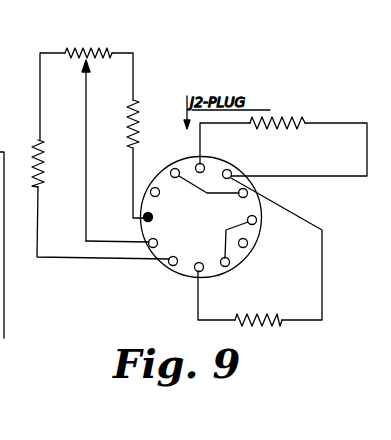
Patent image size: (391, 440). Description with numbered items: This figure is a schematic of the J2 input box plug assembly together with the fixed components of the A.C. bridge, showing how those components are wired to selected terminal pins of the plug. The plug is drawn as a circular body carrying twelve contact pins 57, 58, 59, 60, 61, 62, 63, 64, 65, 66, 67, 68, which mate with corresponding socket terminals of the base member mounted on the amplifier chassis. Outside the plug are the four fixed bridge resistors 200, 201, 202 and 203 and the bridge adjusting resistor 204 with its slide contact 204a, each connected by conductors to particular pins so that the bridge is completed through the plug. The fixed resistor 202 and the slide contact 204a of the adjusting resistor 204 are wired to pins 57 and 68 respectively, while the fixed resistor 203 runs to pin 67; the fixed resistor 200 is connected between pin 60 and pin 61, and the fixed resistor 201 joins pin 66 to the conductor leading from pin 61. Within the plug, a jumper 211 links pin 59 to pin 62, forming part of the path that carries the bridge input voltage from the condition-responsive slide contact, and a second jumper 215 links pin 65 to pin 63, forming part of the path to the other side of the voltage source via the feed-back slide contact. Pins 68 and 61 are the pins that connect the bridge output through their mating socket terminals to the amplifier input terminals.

The fixed resistor 200 is at (284, 120).
The fixed resistor 201 is at (252, 313).
The fixed resistor 202 is at (127, 122).
The fixed resistor 203 is at (32, 146).
The bridge adjusting resistor 204 is at (105, 52).
The slide contact 204a is at (86, 67).
The jumper 211 is at (227, 195).
The jumper 215 is at (228, 228).
The contact pin 57 is at (141, 219).
The contact pin 58 is at (159, 195).
The contact pin 59 is at (172, 170).
The contact pin 60 is at (203, 163).
The contact pin 61 is at (231, 171).
The contact pin 62 is at (248, 192).
The contact pin 63 is at (257, 221).
The contact pin 64 is at (248, 243).
The contact pin 65 is at (245, 272).
The contact pin 66 is at (203, 272).
The contact pin 67 is at (175, 266).
The contact pin 68 is at (146, 244).